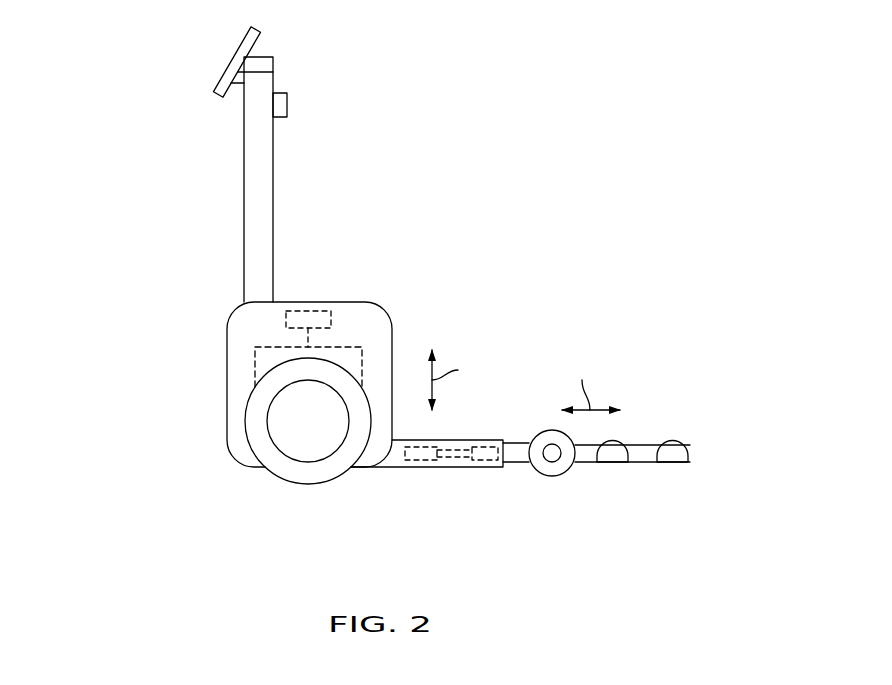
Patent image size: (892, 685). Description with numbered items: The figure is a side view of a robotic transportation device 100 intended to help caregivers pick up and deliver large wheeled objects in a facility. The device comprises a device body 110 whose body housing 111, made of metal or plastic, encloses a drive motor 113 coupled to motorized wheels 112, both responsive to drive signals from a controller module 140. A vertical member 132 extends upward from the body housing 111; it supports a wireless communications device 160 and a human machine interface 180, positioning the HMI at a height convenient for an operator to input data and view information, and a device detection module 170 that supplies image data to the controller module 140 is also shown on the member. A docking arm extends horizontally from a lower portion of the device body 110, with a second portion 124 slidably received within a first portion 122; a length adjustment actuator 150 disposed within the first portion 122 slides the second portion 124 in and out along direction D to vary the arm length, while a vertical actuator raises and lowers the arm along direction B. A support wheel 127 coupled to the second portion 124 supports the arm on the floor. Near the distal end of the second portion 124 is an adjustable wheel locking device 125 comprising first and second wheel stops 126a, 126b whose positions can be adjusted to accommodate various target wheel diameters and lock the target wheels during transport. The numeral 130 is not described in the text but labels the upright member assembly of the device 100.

The robotic transportation device 100 is at (147, 137).
The device body 110 is at (382, 292).
The body housing 111 is at (226, 348).
The motorized wheels 112 is at (308, 485).
The drive motor 113 is at (362, 347).
The first portion 122 is at (488, 468).
The second portion 124 is at (518, 443).
The adjustable wheel locking device 125 is at (693, 377).
The first wheel stop 126a is at (687, 448).
The second wheel stop 126b is at (622, 443).
The support wheel 127 is at (550, 477).
The mast assembly 130 is at (227, 183).
The vertical member 132 is at (274, 147).
The controller module 140 is at (308, 312).
The length adjustment actuator 150 is at (420, 462).
The wireless communications device 160 is at (274, 63).
The device detection module 170 is at (287, 105).
The human machine interface 180 is at (235, 53).